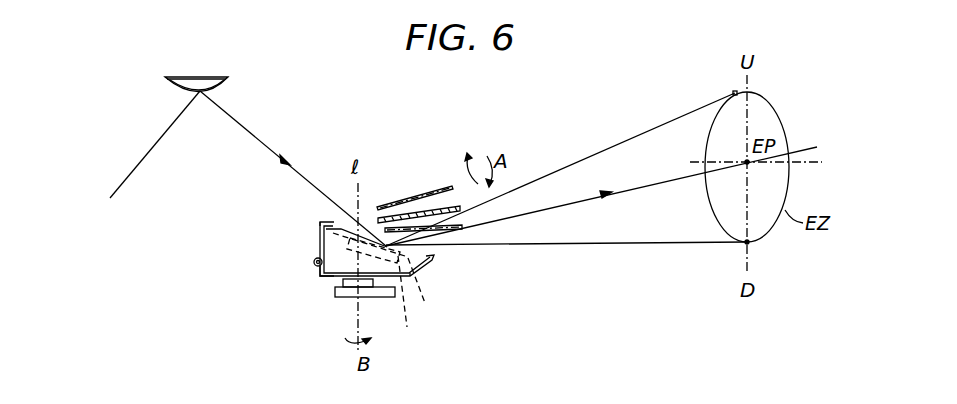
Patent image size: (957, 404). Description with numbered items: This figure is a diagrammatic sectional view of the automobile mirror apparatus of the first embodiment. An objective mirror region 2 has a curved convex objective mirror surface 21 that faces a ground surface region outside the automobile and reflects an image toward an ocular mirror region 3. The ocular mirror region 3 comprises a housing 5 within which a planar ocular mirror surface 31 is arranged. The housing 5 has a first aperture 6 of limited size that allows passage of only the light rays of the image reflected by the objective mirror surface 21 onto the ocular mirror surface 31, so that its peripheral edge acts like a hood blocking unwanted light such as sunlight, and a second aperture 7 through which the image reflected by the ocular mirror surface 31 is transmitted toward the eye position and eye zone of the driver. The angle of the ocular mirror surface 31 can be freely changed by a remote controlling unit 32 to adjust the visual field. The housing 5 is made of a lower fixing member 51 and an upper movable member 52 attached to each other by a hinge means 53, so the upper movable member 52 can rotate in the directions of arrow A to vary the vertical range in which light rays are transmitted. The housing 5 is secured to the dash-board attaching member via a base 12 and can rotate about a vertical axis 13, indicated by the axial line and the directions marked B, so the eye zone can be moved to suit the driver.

The objective mirror region 2 is at (214, 72).
The objective mirror surface 21 is at (190, 88).
The first aperture 6 is at (350, 203).
The housing 5 is at (432, 214).
The upper movable member 52 is at (456, 205).
The second aperture 7 is at (438, 253).
The hinge means 53 is at (313, 261).
The lower fixing member 51 is at (322, 275).
The vertical axis 13 is at (343, 284).
The base 12 is at (351, 294).
The ocular mirror region 3 is at (432, 274).
The ocular mirror surface 31 is at (426, 294).
The remote controlling unit 32 is at (410, 303).